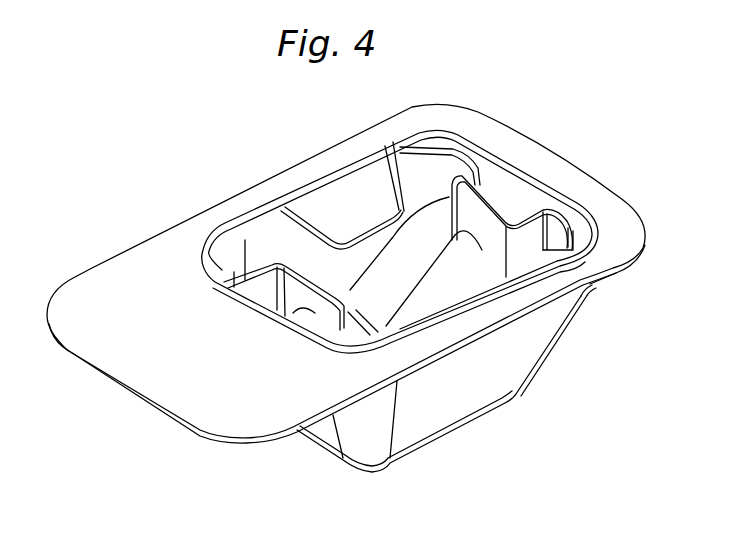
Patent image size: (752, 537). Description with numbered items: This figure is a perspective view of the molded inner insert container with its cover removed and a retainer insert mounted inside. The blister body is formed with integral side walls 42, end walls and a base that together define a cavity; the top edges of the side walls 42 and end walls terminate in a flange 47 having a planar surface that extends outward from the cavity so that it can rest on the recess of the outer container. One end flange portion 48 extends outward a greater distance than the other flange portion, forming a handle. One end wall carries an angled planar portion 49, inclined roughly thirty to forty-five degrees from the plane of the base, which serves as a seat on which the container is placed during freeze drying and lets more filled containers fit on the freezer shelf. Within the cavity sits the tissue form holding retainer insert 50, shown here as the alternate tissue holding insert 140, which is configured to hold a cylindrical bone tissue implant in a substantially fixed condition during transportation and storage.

The alternate tissue holding insert 140 is at (470, 132).
The flange 47 is at (621, 208).
The end flange portion 48 is at (118, 368).
The tissue form holding retainer insert 50 is at (613, 268).
The angled planar portion 49 is at (553, 343).
The side walls 42 is at (478, 403).